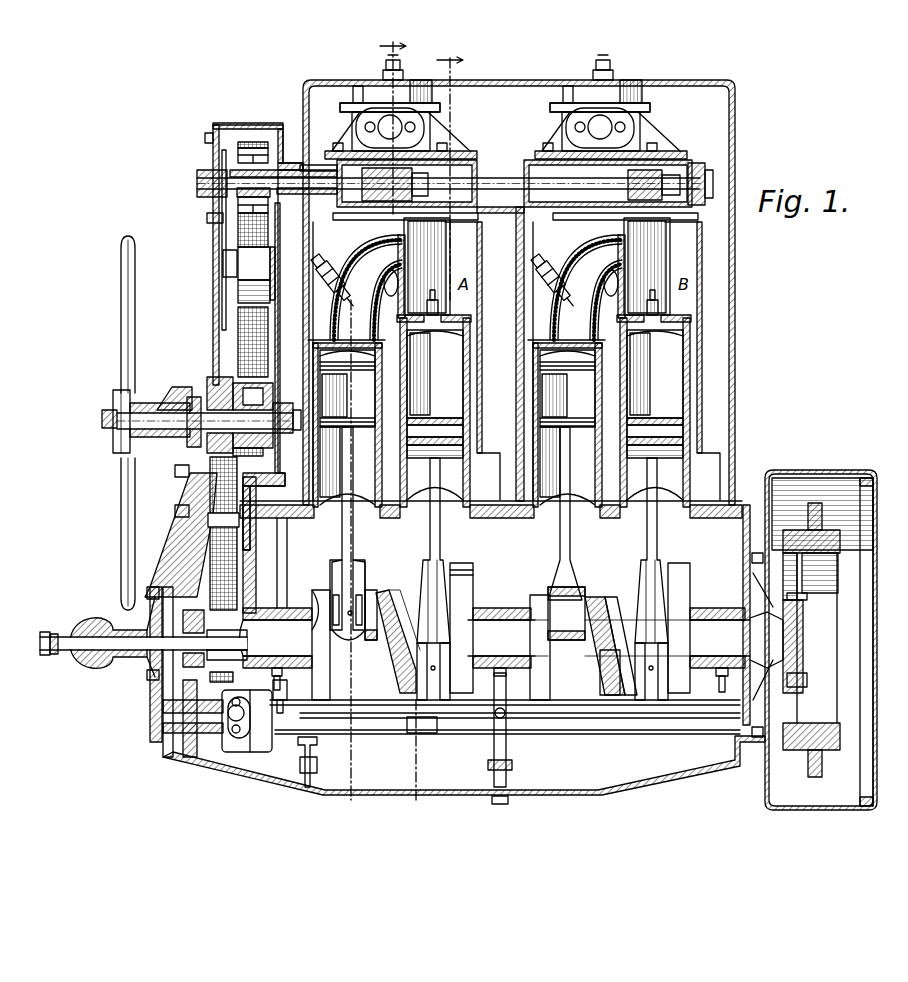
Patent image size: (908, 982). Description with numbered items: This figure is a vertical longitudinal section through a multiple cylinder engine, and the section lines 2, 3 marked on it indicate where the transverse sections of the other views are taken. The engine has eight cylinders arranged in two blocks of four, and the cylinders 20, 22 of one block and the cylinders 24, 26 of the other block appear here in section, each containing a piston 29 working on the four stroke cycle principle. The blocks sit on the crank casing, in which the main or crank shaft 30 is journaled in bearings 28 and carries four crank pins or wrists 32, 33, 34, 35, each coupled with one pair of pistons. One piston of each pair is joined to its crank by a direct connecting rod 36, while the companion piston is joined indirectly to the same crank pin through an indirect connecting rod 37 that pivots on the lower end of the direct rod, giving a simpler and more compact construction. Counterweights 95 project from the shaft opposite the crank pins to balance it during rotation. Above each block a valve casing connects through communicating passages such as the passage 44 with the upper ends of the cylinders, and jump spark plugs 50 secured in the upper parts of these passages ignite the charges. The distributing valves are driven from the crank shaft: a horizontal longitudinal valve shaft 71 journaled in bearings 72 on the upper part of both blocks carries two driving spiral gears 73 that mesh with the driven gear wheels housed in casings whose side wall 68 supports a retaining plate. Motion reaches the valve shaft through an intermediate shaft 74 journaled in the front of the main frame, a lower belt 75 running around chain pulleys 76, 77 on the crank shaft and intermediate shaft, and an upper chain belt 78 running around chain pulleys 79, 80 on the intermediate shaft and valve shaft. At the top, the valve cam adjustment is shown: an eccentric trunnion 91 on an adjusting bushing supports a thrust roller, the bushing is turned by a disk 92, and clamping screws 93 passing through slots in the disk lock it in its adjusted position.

The section line 2- 2 is at (378, 416).
The section line 3- 3 is at (439, 422).
The cylinder 20 is at (345, 421).
The cylinder 22 is at (470, 480).
The cylinder 24 is at (562, 421).
The cylinder 26 is at (680, 480).
The bearings 28 is at (290, 608).
The piston 29 is at (702, 420).
The main or crank shaft 30 is at (482, 620).
The crank pin or wrist 32 is at (398, 600).
The crank pin or wrist 33 is at (410, 690).
The crank pin or wrist 34 is at (582, 610).
The crank pin or wrist 35 is at (608, 690).
The direct connecting rod 36 is at (433, 513).
The indirect connecting rod 37 is at (338, 562).
The communicating passage 44 is at (476, 287).
The jump spark plug 50 is at (328, 258).
The side wall of gear casing 68 is at (630, 172).
The valve shaft 71 is at (497, 177).
The bearings 72 is at (338, 168).
The driving spiral gear 73 is at (432, 170).
The intermediate shaft 74 is at (195, 395).
The lower belt 75 is at (190, 490).
The chain pulley 76 is at (190, 632).
The chain pulley 77 is at (233, 452).
The upper chain belt 78 is at (212, 322).
The chain pulley 79 is at (262, 390).
The chain pulley 80 is at (238, 149).
The trunnion 91 is at (490, 135).
The disk 92 is at (432, 135).
The clamping screw 93 is at (368, 115).
The counterweight 95 is at (458, 563).